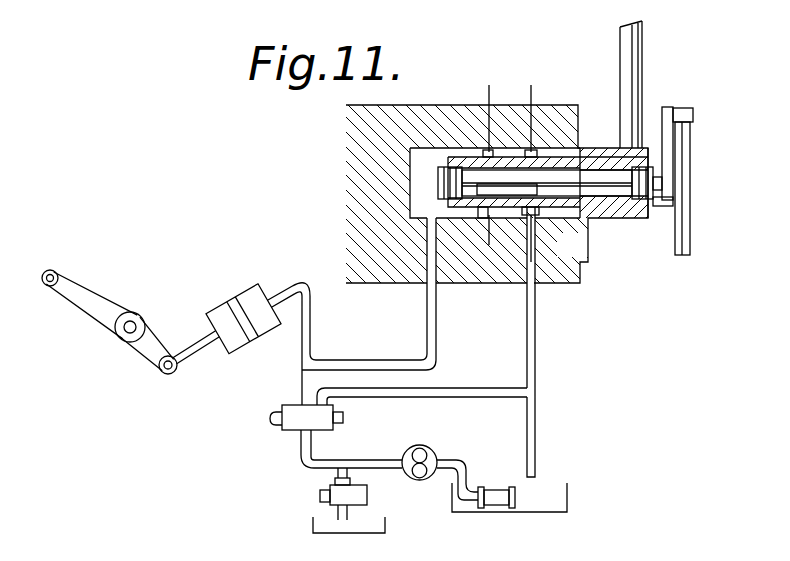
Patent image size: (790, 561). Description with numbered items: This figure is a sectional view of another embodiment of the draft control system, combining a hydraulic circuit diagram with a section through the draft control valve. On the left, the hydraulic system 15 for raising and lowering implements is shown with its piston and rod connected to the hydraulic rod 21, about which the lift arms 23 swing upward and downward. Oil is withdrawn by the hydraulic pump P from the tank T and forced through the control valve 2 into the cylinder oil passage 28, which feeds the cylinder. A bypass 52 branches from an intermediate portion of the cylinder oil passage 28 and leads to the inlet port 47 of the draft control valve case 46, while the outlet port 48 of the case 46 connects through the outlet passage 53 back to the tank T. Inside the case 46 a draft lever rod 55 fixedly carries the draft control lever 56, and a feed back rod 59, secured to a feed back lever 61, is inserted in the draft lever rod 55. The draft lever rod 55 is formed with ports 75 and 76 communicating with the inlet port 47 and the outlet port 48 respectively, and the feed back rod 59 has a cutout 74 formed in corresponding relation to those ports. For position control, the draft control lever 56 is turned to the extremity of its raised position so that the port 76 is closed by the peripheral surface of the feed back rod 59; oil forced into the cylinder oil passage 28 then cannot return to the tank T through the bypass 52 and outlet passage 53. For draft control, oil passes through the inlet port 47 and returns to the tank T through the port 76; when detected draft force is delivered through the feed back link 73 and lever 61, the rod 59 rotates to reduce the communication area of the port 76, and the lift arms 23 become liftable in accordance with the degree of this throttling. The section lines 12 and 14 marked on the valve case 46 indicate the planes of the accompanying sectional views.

The control valve 2 is at (289, 432).
The section line 12 is at (545, 255).
The section line 14 is at (453, 240).
The hydraulic system 15 is at (235, 288).
The hydraulic rod 21 is at (145, 322).
The lift arm 23 is at (99, 302).
The cylinder oil passage 28 is at (310, 318).
The draft control valve case 46 is at (347, 133).
The inlet port 47 is at (428, 285).
The outlet port 48 is at (528, 285).
The bypass 52 is at (437, 330).
The outlet passage 53 is at (536, 330).
The draft lever rod 55 is at (605, 147).
The draft control lever 56 is at (643, 62).
The feed back rod 59 is at (618, 200).
The feed back lever 61 is at (668, 145).
The feed back link 73 is at (689, 191).
The cutout 74 is at (497, 216).
The port 75 is at (489, 212).
The port 76 is at (535, 204).
The hydraulic pump P is at (428, 447).
The tank T is at (452, 506).